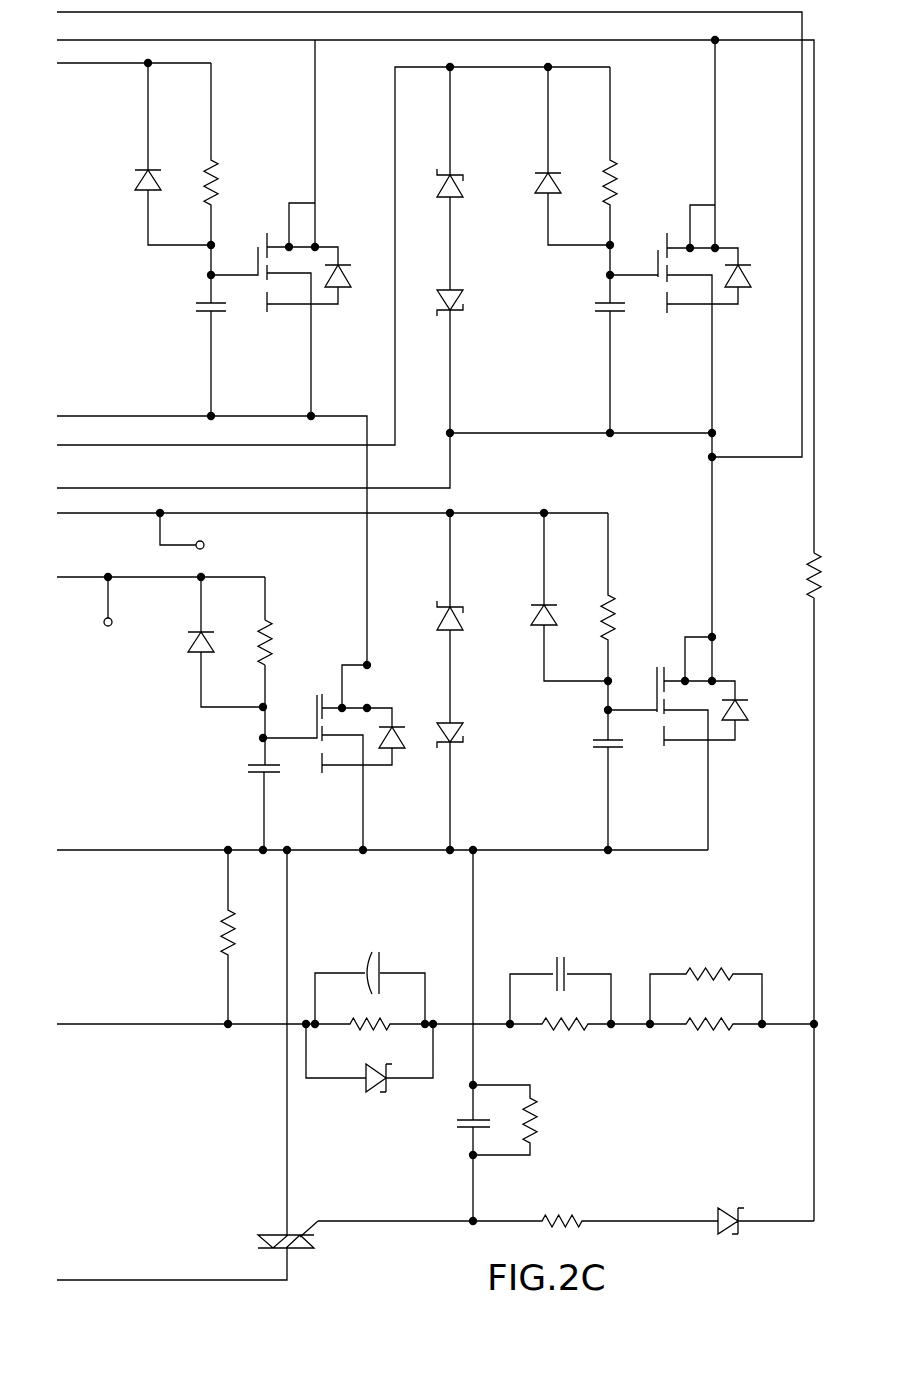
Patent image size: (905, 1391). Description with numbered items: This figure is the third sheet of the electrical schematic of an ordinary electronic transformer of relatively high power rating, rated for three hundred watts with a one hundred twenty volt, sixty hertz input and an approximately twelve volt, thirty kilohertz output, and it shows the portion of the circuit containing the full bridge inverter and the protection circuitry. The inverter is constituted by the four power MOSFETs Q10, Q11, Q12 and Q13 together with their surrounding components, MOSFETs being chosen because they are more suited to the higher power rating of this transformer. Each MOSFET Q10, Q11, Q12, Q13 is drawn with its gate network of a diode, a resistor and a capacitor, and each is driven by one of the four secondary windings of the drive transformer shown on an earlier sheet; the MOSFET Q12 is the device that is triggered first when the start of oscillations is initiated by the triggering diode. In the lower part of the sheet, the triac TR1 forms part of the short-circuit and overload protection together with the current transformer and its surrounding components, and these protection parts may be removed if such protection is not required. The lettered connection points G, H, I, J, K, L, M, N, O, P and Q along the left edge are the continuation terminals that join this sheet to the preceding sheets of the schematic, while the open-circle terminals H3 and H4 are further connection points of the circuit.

The power MOSFET Q10 is at (702, 360).
The power MOSFET Q11 is at (303, 228).
The power MOSFET Q12 is at (341, 757).
The power MOSFET Q13 is at (685, 742).
The triac TR1 is at (279, 1229).
The terminal H3 is at (109, 615).
The terminal H4 is at (203, 535).
The terminal G is at (418, 230).
The terminal H is at (427, 623).
The terminal I is at (124, 64).
The terminal J is at (201, 536).
The terminal K is at (322, 262).
The terminal L is at (375, 466).
The terminal M is at (320, 513).
The terminal N is at (149, 578).
The terminal O is at (370, 851).
The terminal P is at (424, 1025).
The terminal Q is at (159, 1271).